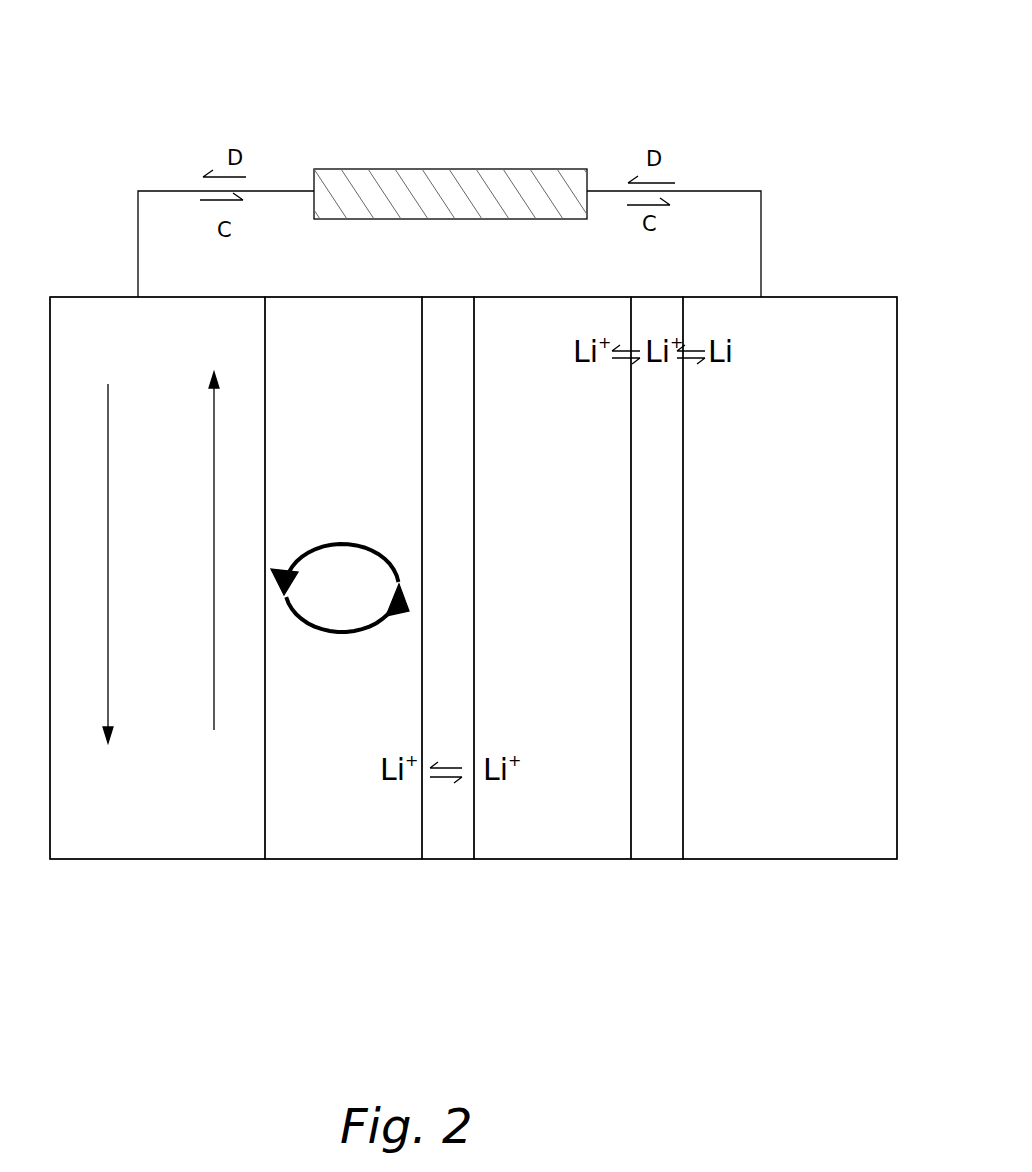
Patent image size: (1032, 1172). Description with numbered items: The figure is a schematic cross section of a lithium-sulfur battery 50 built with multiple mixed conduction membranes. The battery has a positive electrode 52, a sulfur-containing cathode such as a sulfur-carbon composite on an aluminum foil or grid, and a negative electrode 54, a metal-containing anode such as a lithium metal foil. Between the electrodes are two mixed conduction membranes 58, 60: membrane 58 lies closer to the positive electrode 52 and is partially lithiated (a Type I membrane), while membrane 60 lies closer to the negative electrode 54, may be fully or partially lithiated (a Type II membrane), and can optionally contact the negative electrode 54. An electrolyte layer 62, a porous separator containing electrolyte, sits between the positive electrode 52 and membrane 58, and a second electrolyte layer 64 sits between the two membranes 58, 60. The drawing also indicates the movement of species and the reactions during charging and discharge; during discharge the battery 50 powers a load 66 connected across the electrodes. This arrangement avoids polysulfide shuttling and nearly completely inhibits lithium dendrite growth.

The lithium-sulfur battery 50 is at (676, 80).
The positive electrode 52 is at (105, 297).
The negative electrode 54 is at (800, 297).
The mixed conduction membrane 58 is at (438, 845).
The mixed conduction membrane 60 is at (645, 810).
The electrolyte layer 62 is at (325, 825).
The electrolyte layer 64 is at (544, 820).
The load 66 is at (442, 178).